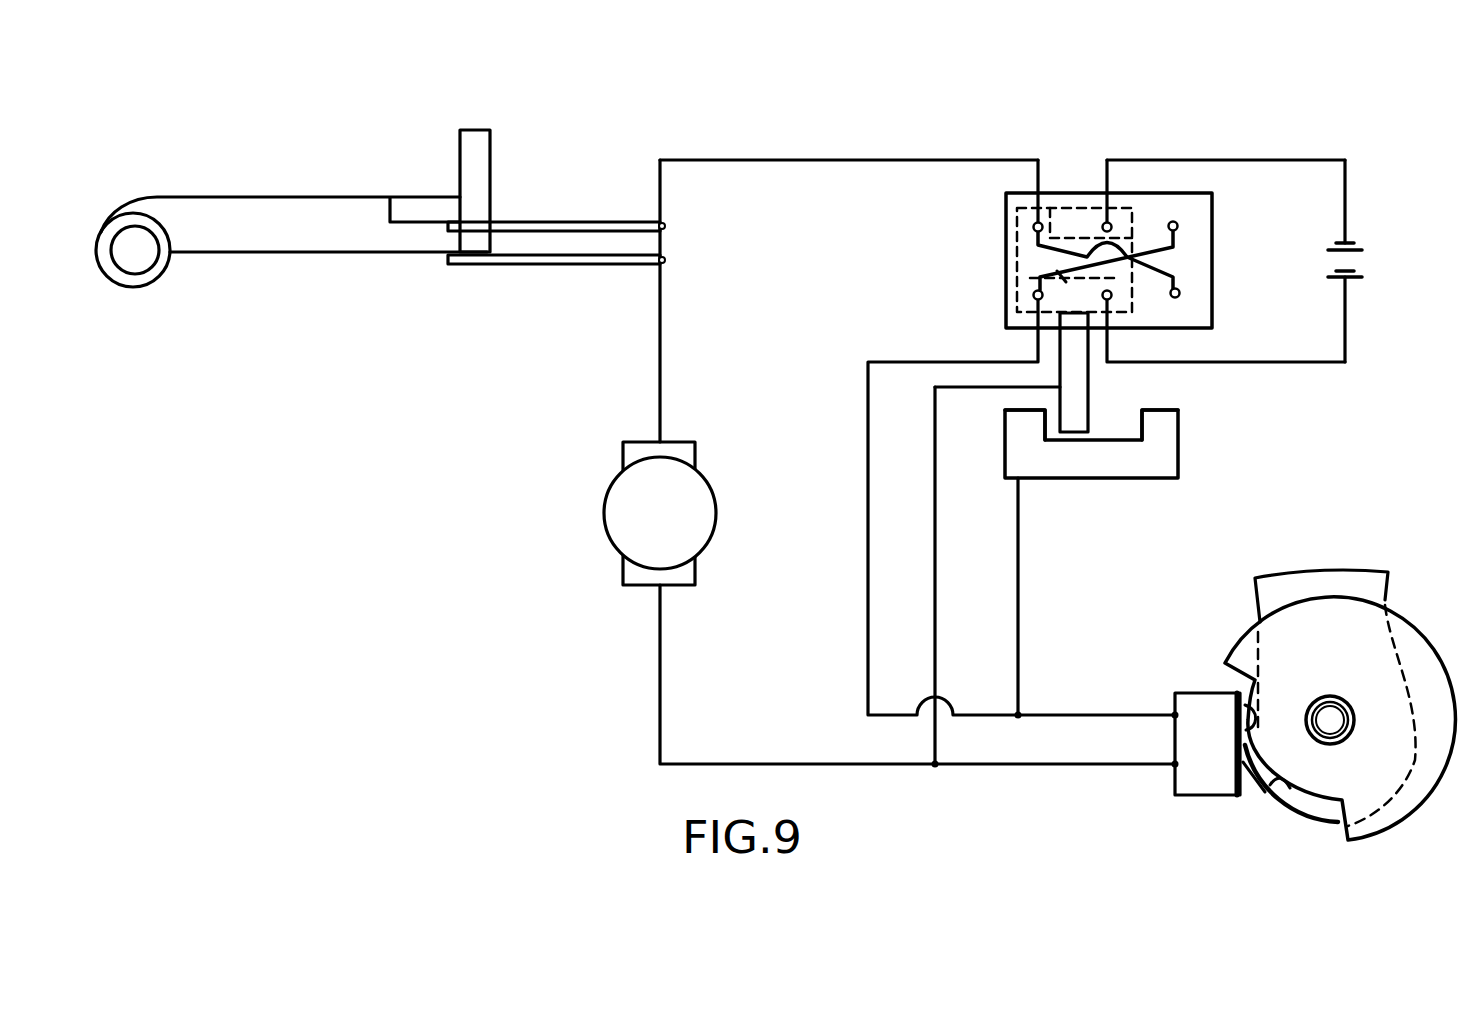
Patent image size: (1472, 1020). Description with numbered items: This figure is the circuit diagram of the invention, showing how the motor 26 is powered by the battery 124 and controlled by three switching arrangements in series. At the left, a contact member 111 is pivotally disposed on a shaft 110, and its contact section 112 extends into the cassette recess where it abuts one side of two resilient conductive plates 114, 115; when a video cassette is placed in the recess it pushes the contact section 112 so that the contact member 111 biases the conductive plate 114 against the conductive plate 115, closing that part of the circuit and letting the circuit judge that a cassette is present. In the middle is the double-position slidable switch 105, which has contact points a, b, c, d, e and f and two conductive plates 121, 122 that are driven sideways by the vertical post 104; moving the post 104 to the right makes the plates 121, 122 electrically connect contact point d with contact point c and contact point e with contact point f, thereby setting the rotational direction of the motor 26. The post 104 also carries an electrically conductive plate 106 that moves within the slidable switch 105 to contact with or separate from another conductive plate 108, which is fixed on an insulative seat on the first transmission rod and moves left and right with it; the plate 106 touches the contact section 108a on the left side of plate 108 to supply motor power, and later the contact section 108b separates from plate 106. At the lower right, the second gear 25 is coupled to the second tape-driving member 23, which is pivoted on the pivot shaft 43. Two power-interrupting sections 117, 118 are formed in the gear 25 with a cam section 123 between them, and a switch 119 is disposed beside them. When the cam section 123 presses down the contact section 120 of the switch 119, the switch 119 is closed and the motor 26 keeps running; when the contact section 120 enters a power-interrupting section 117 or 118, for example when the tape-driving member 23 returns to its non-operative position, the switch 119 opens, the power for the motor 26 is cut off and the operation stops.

The shaft 110 is at (127, 255).
The contact member 111 is at (260, 195).
The contact section 112 is at (472, 128).
The resilient conductive plate 114 is at (560, 222).
The resilient conductive plate 115 is at (537, 268).
The motor 26 is at (603, 512).
The vertical post 104 is at (1010, 243).
The double-position slidable switch 105 is at (1212, 243).
The conductive plate 121 is at (1063, 217).
The conductive plate 122 is at (1057, 272).
The battery 124 is at (1362, 243).
The electrically conductive plate 106 is at (1090, 385).
The conductive plate 108 is at (1110, 480).
The contact section 108a is at (1022, 410).
The contact section 108b is at (1160, 410).
The switch 119 is at (1188, 783).
The power-interrupting section 117 is at (1237, 700).
The contact section 120 is at (1253, 713).
The second gear 25 is at (1425, 803).
The power-interrupting section 118 is at (1273, 787).
The cam section 123 is at (1243, 800).
The pivot shaft 43 is at (1358, 727).
The second tape-driving member 23 is at (1390, 588).
The contact point a is at (1036, 222).
The contact point b is at (1108, 222).
The contact point c is at (1173, 222).
The contact point d is at (1034, 298).
The contact point e is at (1113, 295).
The contact point f is at (1210, 295).